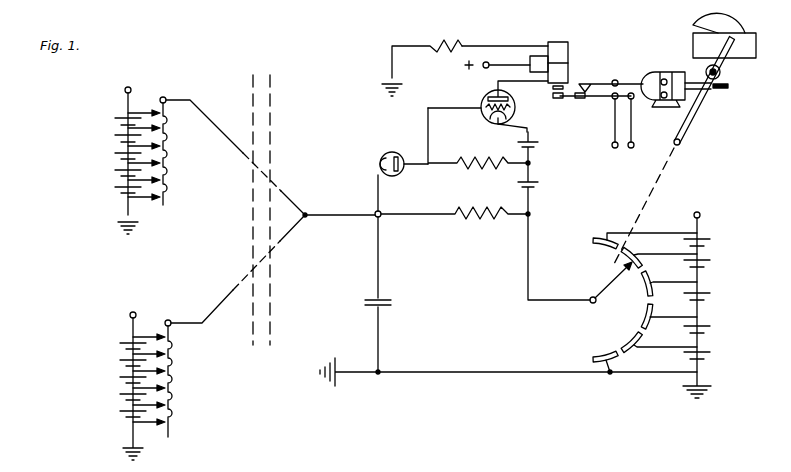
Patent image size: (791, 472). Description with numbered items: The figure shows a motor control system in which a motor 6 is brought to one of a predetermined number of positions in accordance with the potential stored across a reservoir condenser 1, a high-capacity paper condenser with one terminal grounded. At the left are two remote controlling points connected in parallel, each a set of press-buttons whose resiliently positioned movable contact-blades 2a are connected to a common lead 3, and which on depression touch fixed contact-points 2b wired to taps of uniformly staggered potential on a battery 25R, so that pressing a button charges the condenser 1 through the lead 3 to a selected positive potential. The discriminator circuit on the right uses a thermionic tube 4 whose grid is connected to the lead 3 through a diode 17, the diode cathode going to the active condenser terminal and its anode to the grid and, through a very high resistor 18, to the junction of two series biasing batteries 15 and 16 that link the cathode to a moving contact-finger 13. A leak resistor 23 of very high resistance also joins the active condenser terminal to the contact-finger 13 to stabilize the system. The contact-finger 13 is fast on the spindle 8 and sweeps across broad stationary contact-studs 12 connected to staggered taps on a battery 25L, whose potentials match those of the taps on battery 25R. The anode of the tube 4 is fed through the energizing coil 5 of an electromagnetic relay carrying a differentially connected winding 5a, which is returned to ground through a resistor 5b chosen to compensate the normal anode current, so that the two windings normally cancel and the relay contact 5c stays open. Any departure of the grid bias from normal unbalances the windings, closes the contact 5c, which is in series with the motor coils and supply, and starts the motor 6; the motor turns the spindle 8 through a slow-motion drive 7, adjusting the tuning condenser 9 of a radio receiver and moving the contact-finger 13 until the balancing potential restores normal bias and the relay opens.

The reservoir condenser 1 is at (386, 292).
The movable contact-blade 2a is at (166, 148).
The fixed contact-point 2b is at (156, 112).
The lead 3 is at (322, 214).
The thermionic tube 4 is at (482, 98).
The energizing coil 5 is at (568, 74).
The differentially connected winding 5a is at (570, 50).
The resistor 5b is at (452, 45).
The relay contact 5c is at (585, 96).
The motor 6 is at (672, 72).
The slow-motion drive 7 is at (718, 82).
The spindle 8 is at (725, 58).
The tuning condenser 9 is at (697, 40).
The stationary contact-studs 12 is at (602, 243).
The moving contact-finger 13 is at (616, 283).
The biasing voltage source 15 is at (538, 185).
The biasing voltage source 16 is at (538, 143).
The diode 17 is at (384, 153).
The resistor 18 is at (480, 157).
The leak resistor 23 is at (454, 229).
The battery 25R is at (125, 170).
The battery 25L is at (707, 292).